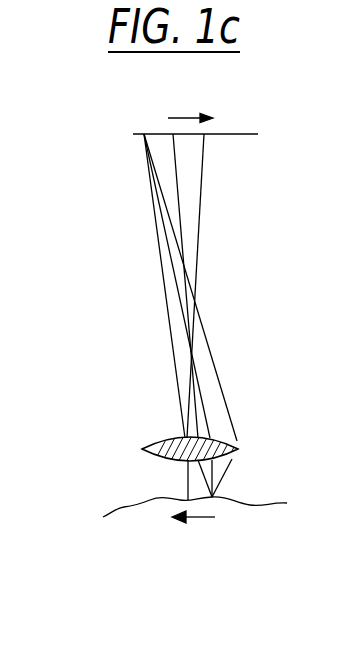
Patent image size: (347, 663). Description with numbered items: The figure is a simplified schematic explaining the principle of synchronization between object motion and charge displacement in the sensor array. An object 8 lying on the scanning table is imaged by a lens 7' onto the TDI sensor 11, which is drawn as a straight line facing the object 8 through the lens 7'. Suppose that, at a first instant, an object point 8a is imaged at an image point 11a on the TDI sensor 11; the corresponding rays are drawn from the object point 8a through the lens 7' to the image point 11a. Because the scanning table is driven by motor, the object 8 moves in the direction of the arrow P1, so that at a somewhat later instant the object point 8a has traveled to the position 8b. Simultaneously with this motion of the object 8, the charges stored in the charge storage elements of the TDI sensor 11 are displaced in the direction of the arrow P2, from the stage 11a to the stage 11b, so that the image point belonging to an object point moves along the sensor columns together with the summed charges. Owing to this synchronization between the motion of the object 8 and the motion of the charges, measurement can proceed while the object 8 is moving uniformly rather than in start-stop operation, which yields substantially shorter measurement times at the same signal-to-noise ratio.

The TDI sensor 11 is at (246, 134).
The image point 11a is at (143, 134).
The stage 11b is at (170, 134).
The arrow P2 is at (192, 118).
The imaging lens 7' is at (213, 428).
The object 8 is at (286, 504).
The object point 8a is at (213, 497).
The position 8b is at (195, 500).
The arrow P1 is at (186, 518).